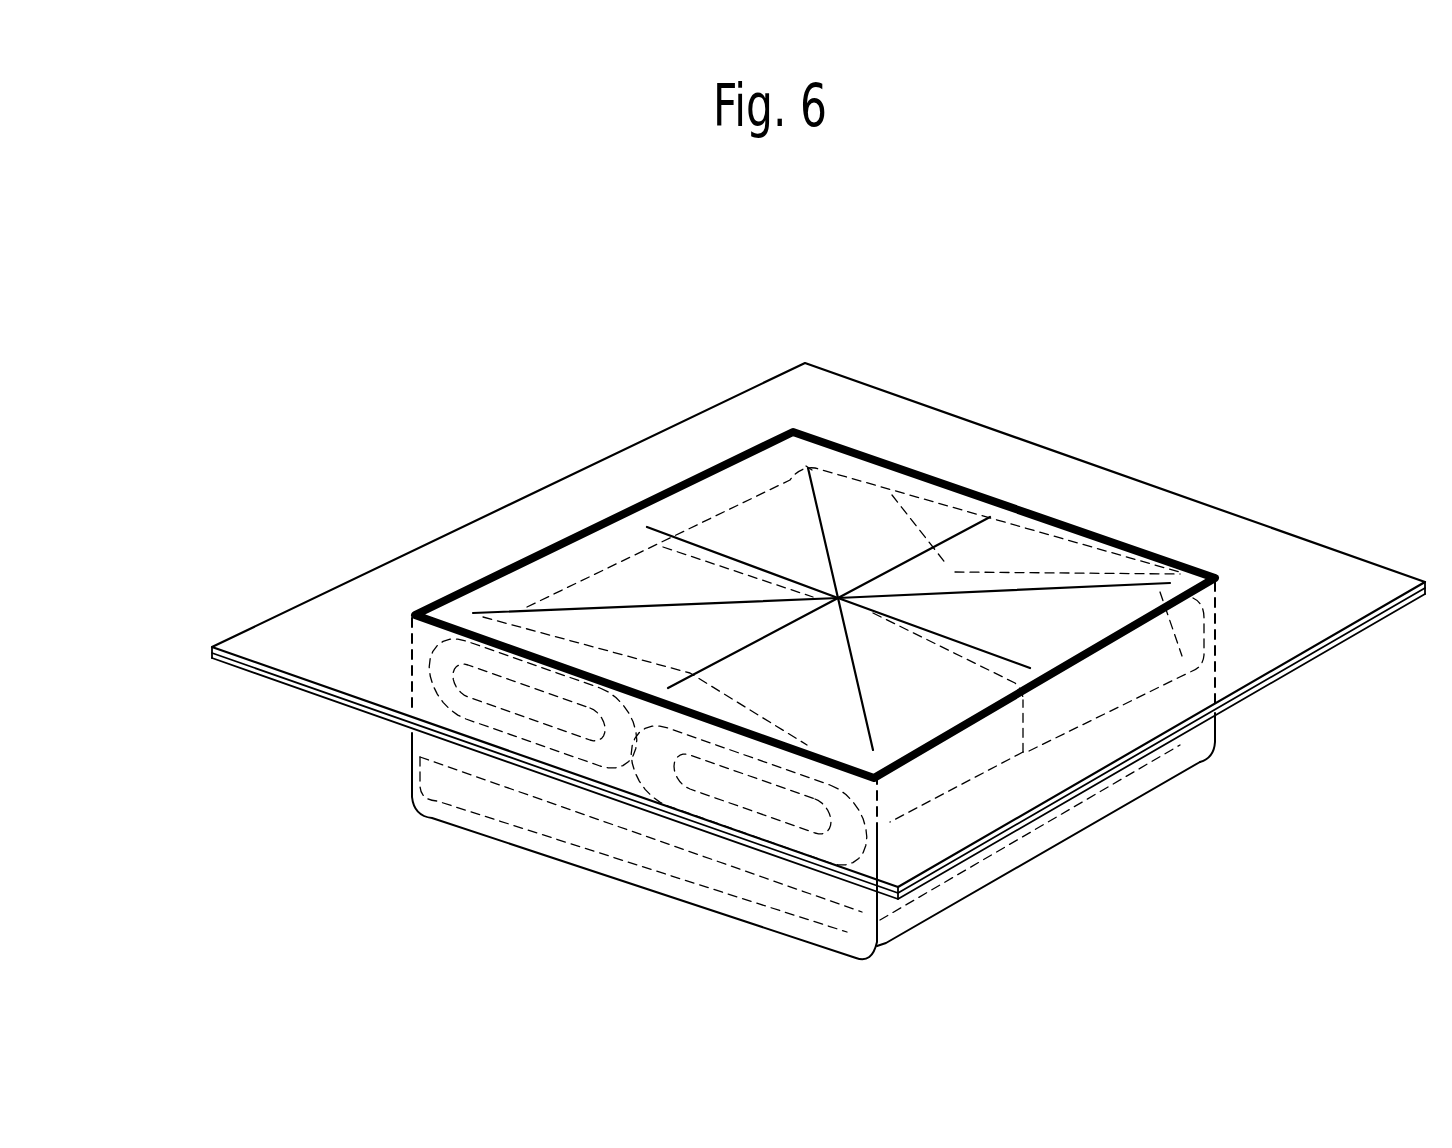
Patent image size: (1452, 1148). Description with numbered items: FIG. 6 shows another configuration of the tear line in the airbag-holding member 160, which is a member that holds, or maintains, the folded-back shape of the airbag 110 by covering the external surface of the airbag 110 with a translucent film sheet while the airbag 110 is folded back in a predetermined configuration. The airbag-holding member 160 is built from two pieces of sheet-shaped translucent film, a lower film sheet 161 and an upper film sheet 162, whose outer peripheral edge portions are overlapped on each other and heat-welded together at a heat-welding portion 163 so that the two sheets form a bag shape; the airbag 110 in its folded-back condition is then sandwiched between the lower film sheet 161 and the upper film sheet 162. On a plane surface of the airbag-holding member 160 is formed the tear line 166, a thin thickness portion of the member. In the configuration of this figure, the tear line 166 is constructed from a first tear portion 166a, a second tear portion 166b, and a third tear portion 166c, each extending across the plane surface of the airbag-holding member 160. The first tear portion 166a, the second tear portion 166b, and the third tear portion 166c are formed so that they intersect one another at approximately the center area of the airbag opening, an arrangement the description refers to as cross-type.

The airbag 110 is at (1117, 713).
The airbag-holding member 160 is at (787, 592).
The lower film sheet 161 is at (258, 678).
The upper film sheet 162 is at (252, 648).
The heat-welding portion 163 is at (467, 585).
The tear line 166 is at (821, 490).
The first tear portion 166a is at (577, 608).
The second tear portion 166b is at (818, 507).
The third tear portion 166c is at (745, 563).